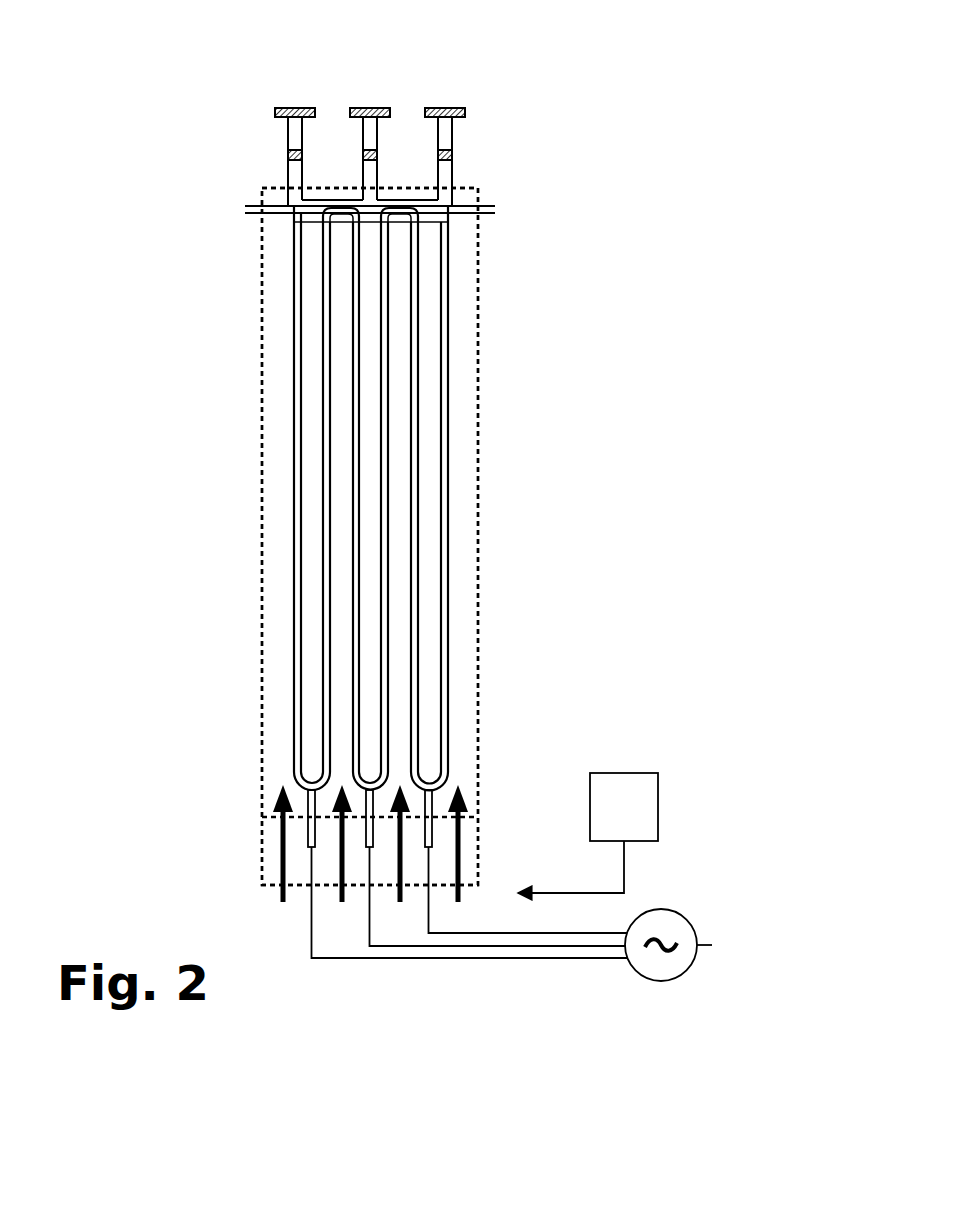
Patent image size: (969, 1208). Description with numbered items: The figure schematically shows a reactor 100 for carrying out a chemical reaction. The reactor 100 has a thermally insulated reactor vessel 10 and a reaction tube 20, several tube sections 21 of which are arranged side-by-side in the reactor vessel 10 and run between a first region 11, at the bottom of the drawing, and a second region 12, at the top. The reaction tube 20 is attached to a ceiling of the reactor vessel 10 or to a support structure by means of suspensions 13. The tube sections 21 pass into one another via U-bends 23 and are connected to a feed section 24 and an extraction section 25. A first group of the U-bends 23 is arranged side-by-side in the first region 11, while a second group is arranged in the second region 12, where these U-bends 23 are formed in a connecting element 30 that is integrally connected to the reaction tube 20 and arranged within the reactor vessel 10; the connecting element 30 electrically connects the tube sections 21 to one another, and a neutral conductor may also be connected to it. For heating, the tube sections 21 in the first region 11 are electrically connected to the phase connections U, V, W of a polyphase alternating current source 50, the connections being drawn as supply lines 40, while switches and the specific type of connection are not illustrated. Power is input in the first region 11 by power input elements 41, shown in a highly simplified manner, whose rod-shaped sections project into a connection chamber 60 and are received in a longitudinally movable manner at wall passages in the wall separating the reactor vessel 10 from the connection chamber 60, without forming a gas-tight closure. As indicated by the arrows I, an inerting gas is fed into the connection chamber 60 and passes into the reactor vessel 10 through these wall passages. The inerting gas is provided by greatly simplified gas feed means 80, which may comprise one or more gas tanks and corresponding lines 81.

The reactor 100 is at (210, 48).
The reactor vessel 10 is at (261, 572).
The first region 11 is at (273, 760).
The second region 12 is at (470, 237).
The suspension 13 is at (452, 145).
The reaction tube 20 is at (345, 463).
The tube section 21 is at (323, 308).
The U-bend 23 is at (327, 210).
The feed section 24 is at (270, 210).
The extraction section 25 is at (490, 207).
The connecting element 30 is at (375, 184).
The supply lines 40 is at (605, 985).
The power input element 41 is at (307, 827).
The polyphase alternating current source 50 is at (712, 945).
The connection chamber 60 is at (478, 878).
The gas feed means 80 is at (624, 807).
The line 81 is at (625, 872).
The phase connection U is at (510, 933).
The phase connection V is at (548, 946).
The phase connection W is at (585, 958).
The arrows indicating inerting gas I is at (280, 872).